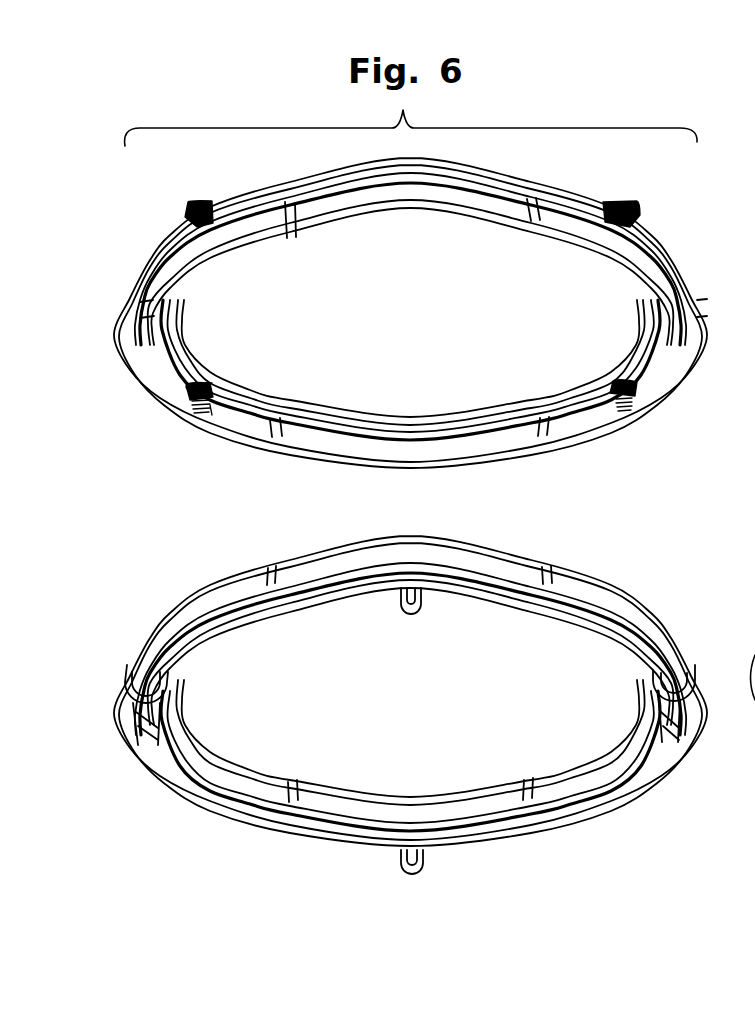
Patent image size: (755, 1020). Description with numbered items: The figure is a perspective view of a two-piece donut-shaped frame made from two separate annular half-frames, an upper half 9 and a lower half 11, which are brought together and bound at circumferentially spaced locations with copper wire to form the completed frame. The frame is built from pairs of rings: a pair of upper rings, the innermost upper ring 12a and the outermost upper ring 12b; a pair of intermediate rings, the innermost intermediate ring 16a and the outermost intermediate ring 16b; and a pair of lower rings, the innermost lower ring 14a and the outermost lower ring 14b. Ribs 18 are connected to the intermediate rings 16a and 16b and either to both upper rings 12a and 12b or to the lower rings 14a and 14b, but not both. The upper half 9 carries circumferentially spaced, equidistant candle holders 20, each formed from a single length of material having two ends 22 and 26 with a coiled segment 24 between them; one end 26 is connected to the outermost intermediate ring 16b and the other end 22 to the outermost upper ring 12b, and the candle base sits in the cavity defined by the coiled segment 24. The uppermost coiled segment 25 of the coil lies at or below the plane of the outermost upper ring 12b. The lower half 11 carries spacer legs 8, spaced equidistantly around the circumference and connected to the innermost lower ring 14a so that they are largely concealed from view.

The spacer legs 8 is at (400, 612).
The upper half 9 is at (247, 437).
The lower half 11 is at (233, 572).
The innermost upper ring 12a is at (357, 415).
The outermost upper ring 12b is at (388, 437).
The innermost lower ring 14a is at (207, 643).
The outermost lower ring 14b is at (160, 650).
The innermost intermediate ring 16a is at (643, 325).
The outermost intermediate ring 16b is at (688, 363).
The ribs 18 is at (547, 197).
The candle holders 20 is at (185, 215).
The end 22 is at (180, 393).
The coiled segment 24 is at (207, 392).
The uppermost coiled segment 25 is at (183, 407).
The end 26 is at (215, 417).